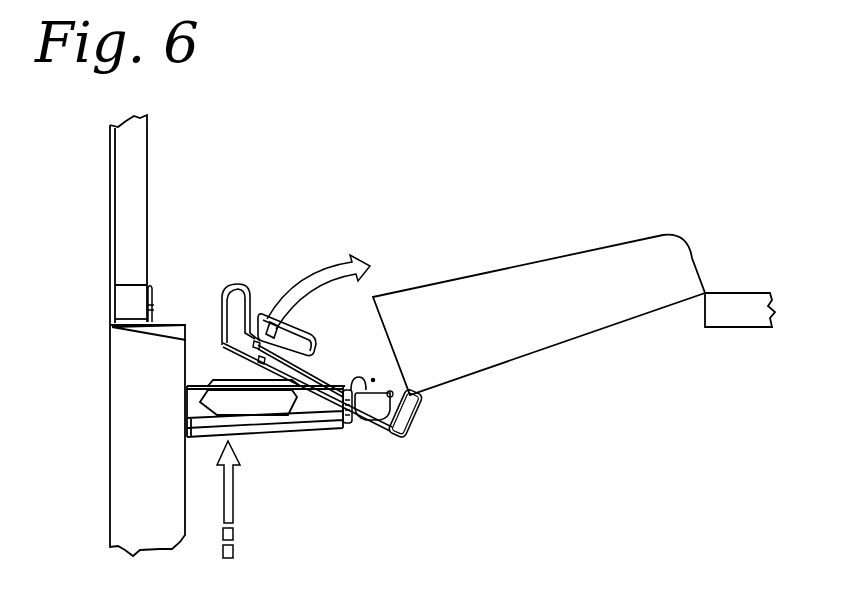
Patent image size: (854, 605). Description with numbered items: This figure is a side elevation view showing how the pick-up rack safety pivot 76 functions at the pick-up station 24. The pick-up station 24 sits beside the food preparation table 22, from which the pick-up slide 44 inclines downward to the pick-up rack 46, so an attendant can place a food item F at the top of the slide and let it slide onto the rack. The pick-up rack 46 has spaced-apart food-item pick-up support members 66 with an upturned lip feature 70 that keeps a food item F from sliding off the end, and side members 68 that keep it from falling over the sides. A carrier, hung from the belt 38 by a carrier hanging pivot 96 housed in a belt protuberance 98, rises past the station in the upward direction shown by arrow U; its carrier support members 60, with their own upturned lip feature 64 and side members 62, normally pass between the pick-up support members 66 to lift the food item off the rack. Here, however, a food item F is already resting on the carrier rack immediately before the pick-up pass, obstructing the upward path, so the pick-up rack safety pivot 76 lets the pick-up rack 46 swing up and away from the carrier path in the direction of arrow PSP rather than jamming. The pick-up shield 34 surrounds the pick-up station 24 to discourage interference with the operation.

The food preparation table 22 is at (748, 303).
The pick-up station 24 is at (593, 232).
The pick-up shield 34 is at (133, 442).
The belt 38 is at (137, 212).
The pick-up slide 44 is at (613, 303).
The pick-up rack 46 is at (288, 324).
The food-item carrier support members 60 is at (198, 410).
The side members 62 is at (200, 380).
The upturned lip feature 64 is at (365, 392).
The food-item pick-up support members 66 is at (110, 313).
The side members 68 is at (262, 316).
The upturned lip feature 70 is at (244, 288).
The pick-up rack safety pivot 76 is at (394, 438).
The carrier hanging pivot 96 is at (148, 300).
The belt protuberance 98 is at (125, 303).
The food item F is at (220, 383).
The pick-up rack safety pivot direction arrow PSP is at (327, 281).
The upward direction arrow U is at (235, 499).